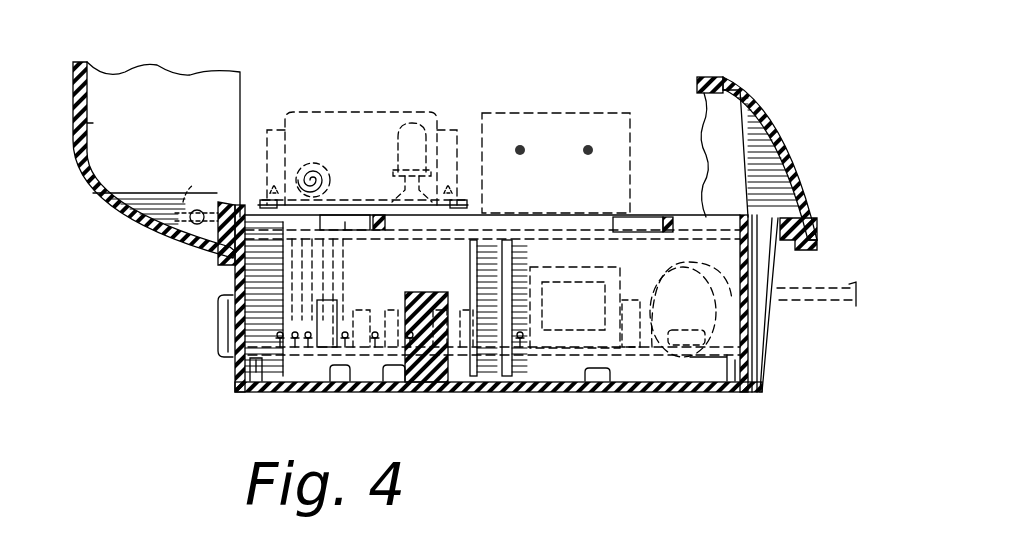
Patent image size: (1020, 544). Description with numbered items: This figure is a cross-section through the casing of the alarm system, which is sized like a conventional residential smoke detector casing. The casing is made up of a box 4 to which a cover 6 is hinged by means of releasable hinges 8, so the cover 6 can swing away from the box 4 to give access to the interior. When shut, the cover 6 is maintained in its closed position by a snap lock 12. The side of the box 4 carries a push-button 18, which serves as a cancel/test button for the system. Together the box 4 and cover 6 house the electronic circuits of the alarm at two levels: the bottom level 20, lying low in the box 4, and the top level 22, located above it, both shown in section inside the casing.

The box 4 is at (742, 347).
The cover 6 is at (128, 222).
The releasable hinges 8 is at (198, 222).
The snap lock 12 is at (800, 190).
The push-button 18 is at (222, 325).
The bottom level 20 is at (575, 352).
The top level 22 is at (580, 233).